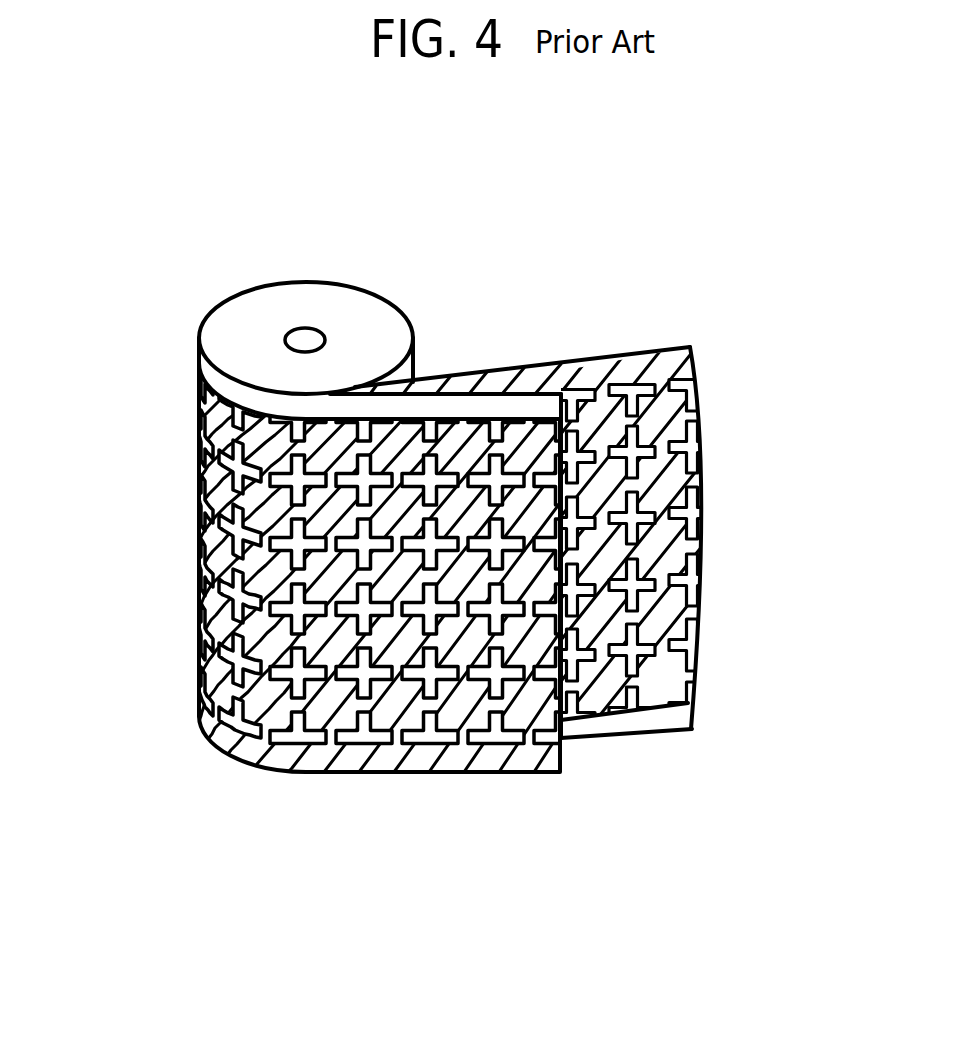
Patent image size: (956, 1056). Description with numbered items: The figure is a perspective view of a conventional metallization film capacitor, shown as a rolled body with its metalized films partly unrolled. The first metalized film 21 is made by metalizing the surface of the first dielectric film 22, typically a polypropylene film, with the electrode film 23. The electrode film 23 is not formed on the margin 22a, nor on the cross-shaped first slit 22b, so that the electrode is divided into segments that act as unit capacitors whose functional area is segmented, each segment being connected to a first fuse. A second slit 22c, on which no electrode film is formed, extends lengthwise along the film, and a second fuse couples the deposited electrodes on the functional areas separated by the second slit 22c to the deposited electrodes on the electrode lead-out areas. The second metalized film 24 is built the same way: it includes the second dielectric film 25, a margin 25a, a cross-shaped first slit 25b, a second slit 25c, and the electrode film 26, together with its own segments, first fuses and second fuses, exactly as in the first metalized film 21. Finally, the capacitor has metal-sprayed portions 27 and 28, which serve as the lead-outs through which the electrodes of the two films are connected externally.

The first metalized film 21 is at (575, 529).
The first dielectric film 22 is at (580, 529).
The margin 22a is at (662, 720).
The cross-shaped first slit 22b is at (640, 435).
The second slit 22c is at (689, 346).
The electrode film 23 is at (575, 510).
The second metalized film 24 is at (326, 611).
The second dielectric film 25 is at (311, 585).
The margin 25a is at (217, 382).
The cross-shaped first slit 25b is at (218, 453).
The second slit 25c is at (223, 727).
The electrode film 26 is at (326, 595).
The metal-sprayed portion 27 is at (326, 310).
The metal-sprayed portion 28 is at (297, 770).